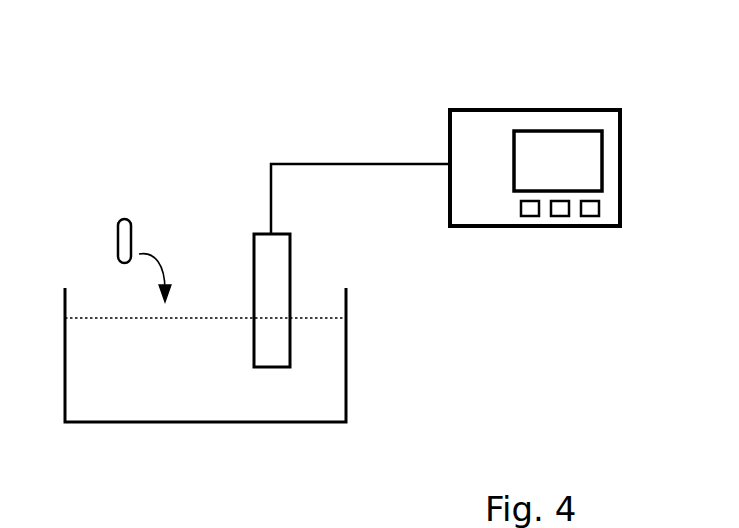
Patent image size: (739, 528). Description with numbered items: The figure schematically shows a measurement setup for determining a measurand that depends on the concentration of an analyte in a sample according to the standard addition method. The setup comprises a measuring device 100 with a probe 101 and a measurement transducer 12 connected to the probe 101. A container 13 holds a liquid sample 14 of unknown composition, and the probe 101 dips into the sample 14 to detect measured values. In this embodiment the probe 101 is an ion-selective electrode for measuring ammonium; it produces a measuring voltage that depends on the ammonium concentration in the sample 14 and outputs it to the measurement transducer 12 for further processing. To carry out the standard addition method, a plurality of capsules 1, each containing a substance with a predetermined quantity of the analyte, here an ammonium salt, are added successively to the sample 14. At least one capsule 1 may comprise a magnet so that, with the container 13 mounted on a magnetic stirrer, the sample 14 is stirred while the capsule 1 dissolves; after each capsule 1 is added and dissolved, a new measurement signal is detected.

The measuring device 100 is at (146, 106).
The capsule 1 is at (122, 232).
The probe 101 is at (271, 271).
The measurement transducer 12 is at (622, 172).
The container 13 is at (348, 387).
The liquid sample 14 is at (206, 398).